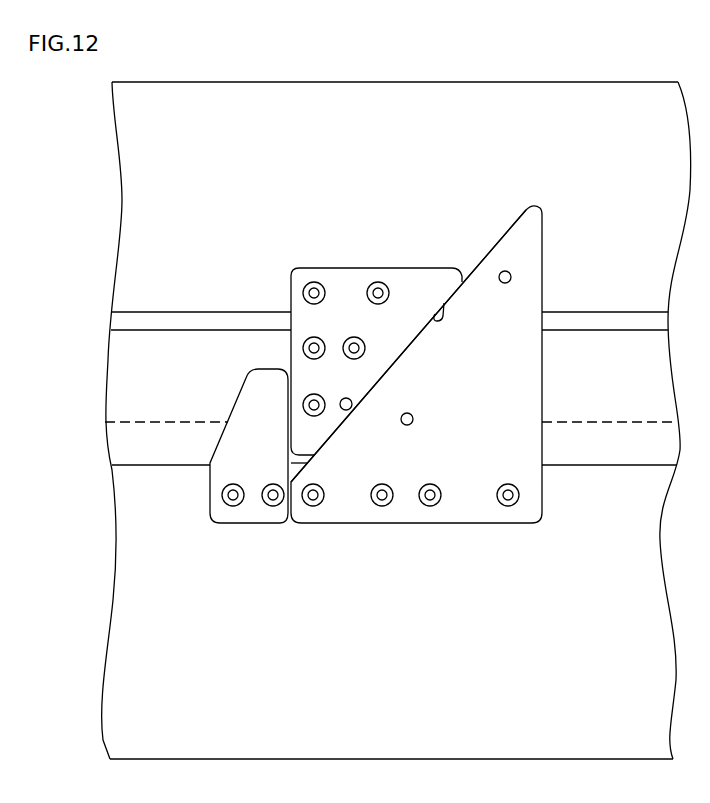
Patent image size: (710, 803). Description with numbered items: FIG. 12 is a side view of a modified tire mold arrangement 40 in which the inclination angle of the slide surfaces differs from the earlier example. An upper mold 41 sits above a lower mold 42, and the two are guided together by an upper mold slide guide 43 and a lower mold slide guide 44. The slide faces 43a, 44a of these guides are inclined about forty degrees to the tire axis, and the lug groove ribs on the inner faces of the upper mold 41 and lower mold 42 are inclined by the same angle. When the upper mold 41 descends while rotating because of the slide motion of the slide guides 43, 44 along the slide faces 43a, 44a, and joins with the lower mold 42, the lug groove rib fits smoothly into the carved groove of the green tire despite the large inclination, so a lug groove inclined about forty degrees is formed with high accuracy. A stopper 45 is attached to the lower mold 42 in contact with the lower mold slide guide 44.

The rail connection assembly 40 is at (258, 72).
The upper mold 41 is at (135, 193).
The lower mold 42 is at (127, 600).
The upper mold slide guide 43 is at (293, 292).
The slide face 43a is at (440, 308).
The lower mold slide guide 44 is at (528, 378).
The slide face 44a is at (488, 247).
The stopper 45 is at (220, 473).